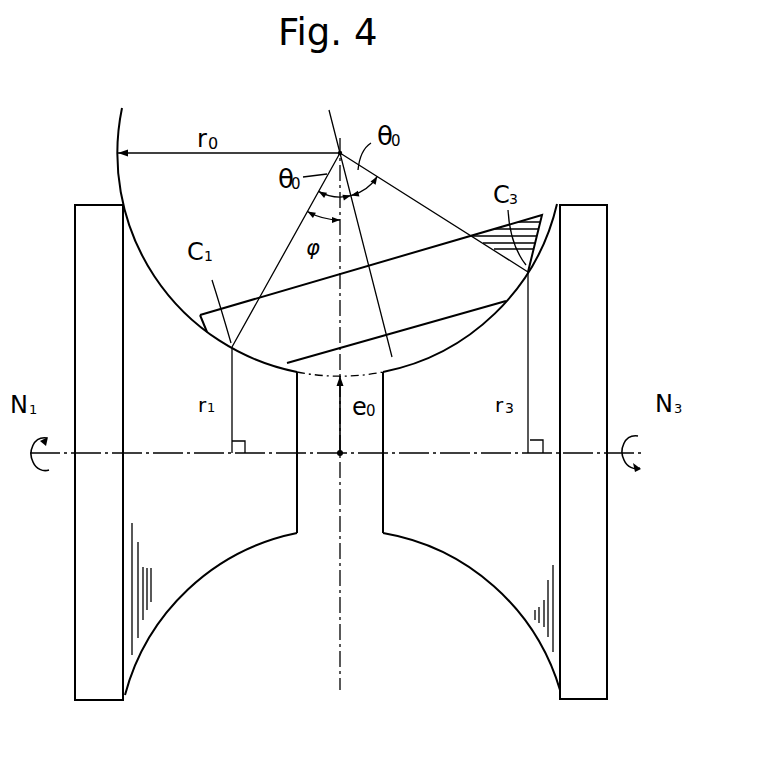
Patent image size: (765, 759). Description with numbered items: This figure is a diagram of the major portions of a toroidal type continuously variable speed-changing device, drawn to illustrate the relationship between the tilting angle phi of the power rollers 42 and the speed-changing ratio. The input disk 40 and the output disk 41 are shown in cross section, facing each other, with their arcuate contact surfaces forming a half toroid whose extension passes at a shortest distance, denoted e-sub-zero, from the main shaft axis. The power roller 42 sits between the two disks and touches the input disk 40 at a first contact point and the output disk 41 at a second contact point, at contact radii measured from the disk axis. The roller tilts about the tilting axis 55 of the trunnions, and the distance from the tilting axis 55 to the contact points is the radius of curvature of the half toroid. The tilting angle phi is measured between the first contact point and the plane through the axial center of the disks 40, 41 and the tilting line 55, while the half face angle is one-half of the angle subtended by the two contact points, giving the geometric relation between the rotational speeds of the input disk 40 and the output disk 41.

The input disk 40 is at (148, 285).
The output disk 41 is at (577, 227).
The power roller 42 is at (432, 263).
The tilting axis of the trunnions 55 is at (337, 151).